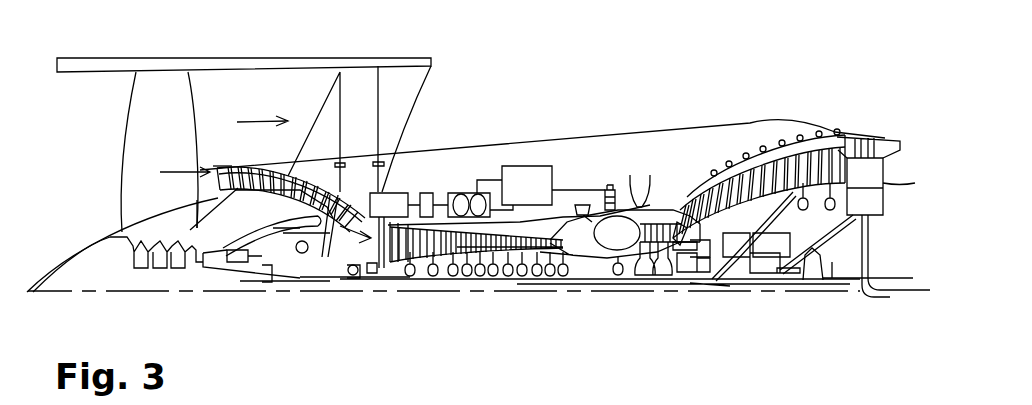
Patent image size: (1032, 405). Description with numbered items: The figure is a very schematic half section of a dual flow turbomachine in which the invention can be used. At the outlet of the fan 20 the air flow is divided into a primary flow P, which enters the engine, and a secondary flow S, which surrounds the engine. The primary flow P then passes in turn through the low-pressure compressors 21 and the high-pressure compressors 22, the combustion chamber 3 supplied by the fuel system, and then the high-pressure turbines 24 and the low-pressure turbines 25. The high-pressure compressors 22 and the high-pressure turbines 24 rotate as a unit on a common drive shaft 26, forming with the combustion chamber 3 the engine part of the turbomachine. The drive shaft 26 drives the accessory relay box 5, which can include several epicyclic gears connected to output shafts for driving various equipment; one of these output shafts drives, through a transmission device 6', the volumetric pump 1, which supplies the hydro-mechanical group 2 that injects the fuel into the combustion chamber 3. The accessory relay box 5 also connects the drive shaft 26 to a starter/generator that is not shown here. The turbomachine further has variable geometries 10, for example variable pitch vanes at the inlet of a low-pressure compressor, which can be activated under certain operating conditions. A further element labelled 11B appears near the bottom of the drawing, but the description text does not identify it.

The volumetric pump 1 is at (478, 193).
The hydro-mechanical group 2 is at (523, 186).
The combustion chamber 3 is at (610, 183).
The accessory relay box 5 is at (421, 193).
The transmission device 6' is at (467, 153).
The variable geometries 10 is at (228, 168).
The low pressure shaft 11B is at (665, 344).
The fan 20 is at (155, 123).
The low-pressure compressors 21 is at (277, 170).
The high-pressure compressors 22 is at (466, 311).
The high-pressure turbines 24 is at (700, 192).
The low-pressure turbines 25 is at (758, 140).
The drive shaft 26 is at (403, 265).
The primary flow P is at (195, 172).
The secondary flow S is at (258, 122).